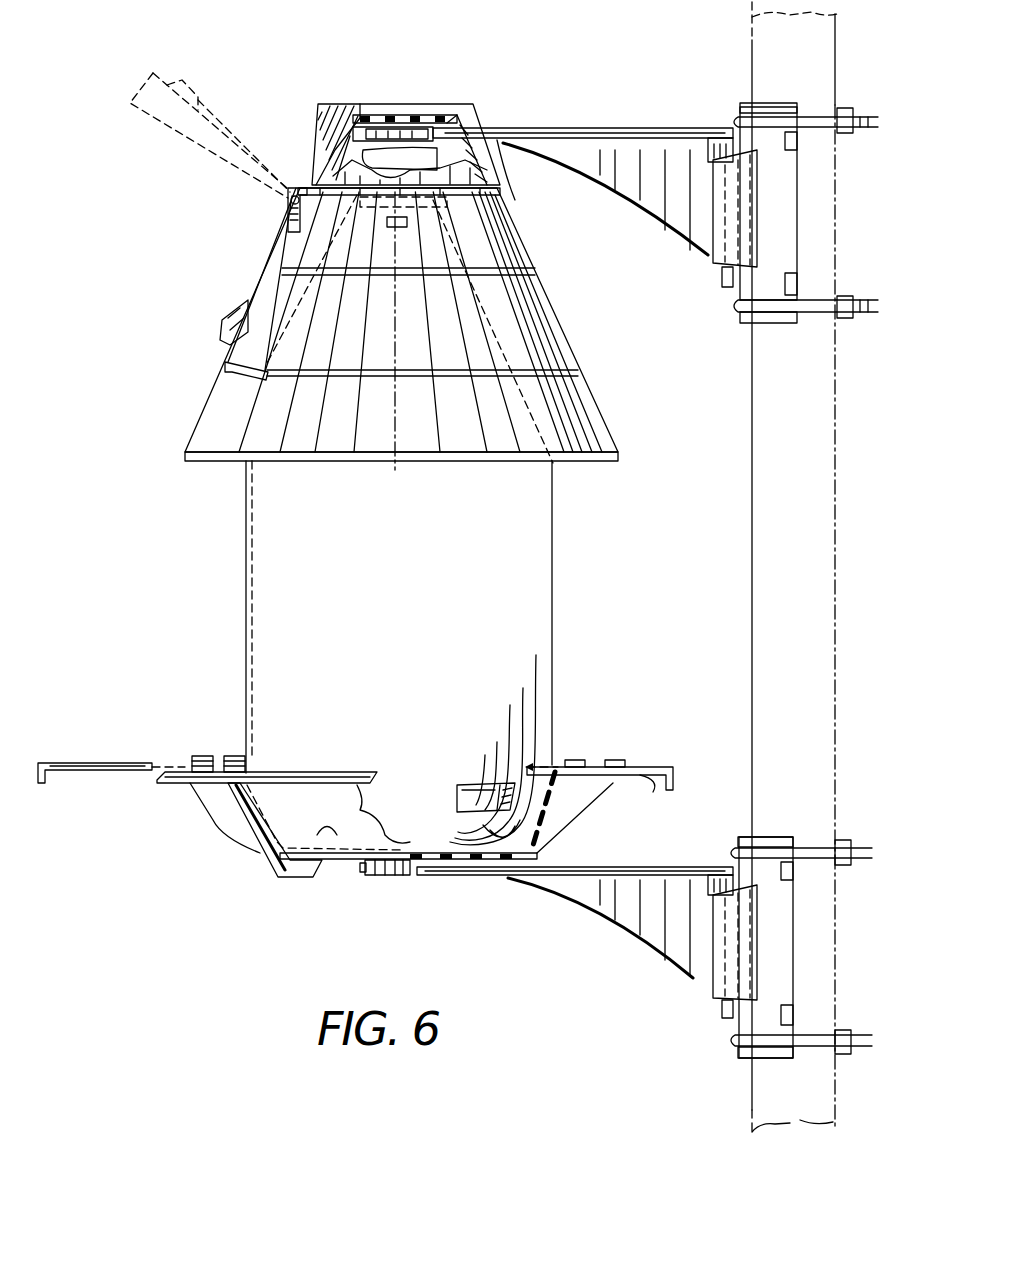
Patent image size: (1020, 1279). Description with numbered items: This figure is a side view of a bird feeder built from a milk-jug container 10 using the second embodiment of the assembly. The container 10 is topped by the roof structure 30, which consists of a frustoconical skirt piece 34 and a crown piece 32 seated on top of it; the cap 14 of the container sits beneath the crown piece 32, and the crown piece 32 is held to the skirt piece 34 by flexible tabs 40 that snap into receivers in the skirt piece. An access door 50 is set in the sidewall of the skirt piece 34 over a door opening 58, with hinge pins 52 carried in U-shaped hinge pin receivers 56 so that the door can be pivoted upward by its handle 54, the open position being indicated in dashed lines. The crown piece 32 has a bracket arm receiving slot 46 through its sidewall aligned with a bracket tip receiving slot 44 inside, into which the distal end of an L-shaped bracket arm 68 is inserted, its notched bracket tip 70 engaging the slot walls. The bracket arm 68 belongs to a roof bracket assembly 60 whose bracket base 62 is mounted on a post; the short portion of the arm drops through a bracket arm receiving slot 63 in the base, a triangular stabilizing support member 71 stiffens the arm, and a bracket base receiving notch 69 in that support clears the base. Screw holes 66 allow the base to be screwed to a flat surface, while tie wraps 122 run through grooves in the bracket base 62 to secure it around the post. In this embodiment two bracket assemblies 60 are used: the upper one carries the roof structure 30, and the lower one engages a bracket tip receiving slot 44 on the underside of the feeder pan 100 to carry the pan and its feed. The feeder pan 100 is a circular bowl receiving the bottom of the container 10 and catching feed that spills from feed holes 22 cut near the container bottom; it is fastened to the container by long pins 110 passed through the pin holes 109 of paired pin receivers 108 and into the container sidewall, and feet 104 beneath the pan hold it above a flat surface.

The container 10 is at (528, 612).
The cap 14 is at (355, 160).
The feed holes 22 is at (478, 805).
The roof structure 30 is at (158, 55).
The crown piece 32 is at (350, 104).
The skirt piece 34 is at (375, 430).
The flexible tabs 40 is at (405, 226).
The bracket tip receiving slot 44 is at (440, 116).
The bracket arm receiving slot 46 is at (505, 145).
The access door 50 is at (268, 278).
The hinge pins 52 is at (287, 188).
The handle 54 is at (222, 320).
The hinge pin receivers 56 is at (288, 206).
The door opening 58 is at (225, 366).
The roof bracket assembly 60 is at (670, 62).
The bracket base 62 is at (785, 218).
The bracket arm receiving slot 63 is at (714, 268).
The screw holes 66 is at (797, 142).
The bracket arm 68 is at (655, 128).
The bracket base receiving notch 69 is at (712, 155).
The bracket tip 70 is at (387, 127).
The stabilizing support member 71 is at (695, 225).
The feeder pan 100 is at (232, 820).
The feet 104 is at (298, 878).
The pin receivers 108 is at (198, 756).
The pin hole 109 is at (234, 756).
The pins 110 is at (78, 763).
The tie wraps 122 is at (805, 108).